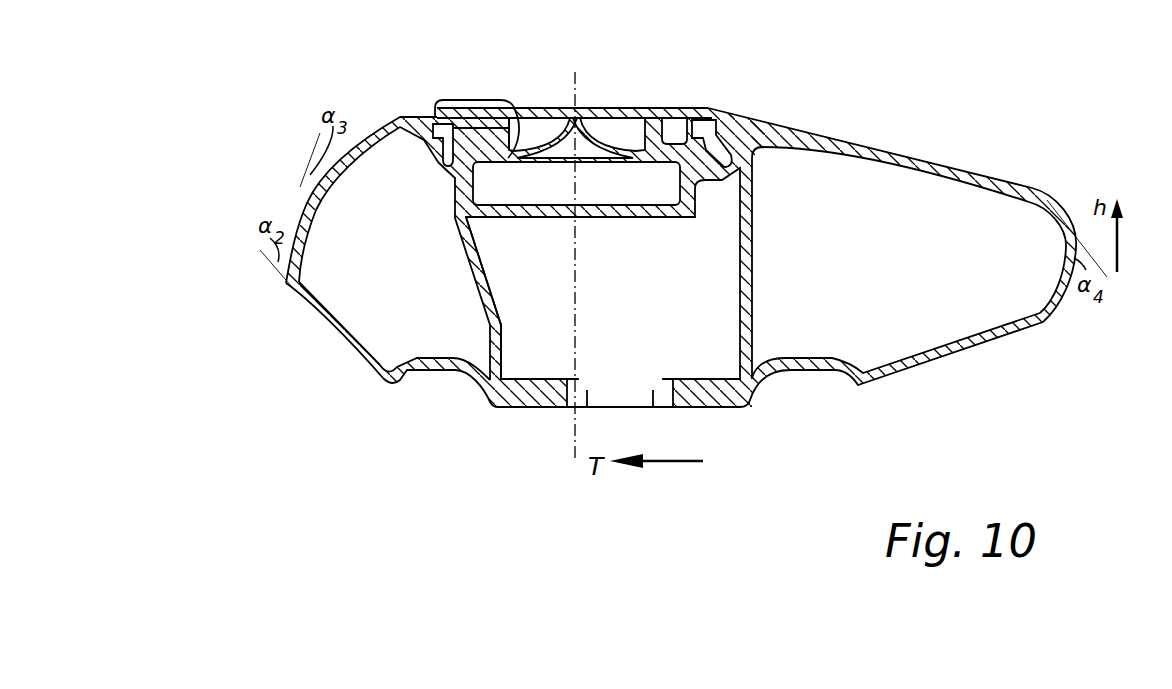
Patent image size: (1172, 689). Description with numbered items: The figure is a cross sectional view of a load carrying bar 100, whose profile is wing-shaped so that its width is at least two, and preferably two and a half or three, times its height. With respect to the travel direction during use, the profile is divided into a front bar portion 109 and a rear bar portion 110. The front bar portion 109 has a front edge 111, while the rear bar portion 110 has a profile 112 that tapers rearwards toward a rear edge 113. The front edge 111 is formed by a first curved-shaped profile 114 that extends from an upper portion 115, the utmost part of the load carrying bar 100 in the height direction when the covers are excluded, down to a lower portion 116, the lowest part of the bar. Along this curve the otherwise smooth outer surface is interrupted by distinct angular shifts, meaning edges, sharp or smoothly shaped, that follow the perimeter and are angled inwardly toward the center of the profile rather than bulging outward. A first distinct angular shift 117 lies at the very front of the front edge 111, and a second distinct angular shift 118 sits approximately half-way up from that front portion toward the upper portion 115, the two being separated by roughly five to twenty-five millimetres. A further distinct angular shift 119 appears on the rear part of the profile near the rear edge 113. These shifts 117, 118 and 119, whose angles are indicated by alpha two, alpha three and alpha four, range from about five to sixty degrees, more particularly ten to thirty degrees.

The load carrying bar 100 is at (993, 105).
The front bar portion 109 is at (321, 69).
The rear bar portion 110 is at (807, 87).
The front edge 111 is at (250, 183).
The profile 112 is at (951, 356).
The rear edge 113 is at (1087, 326).
The first curved-shaped profile 114 is at (307, 246).
The upper portion 115 is at (432, 113).
The lower portion 116 is at (488, 390).
The first distinct angular shift 117 is at (296, 284).
The second distinct angular shift 118 is at (300, 188).
The distinct angular shift 119 is at (1077, 235).